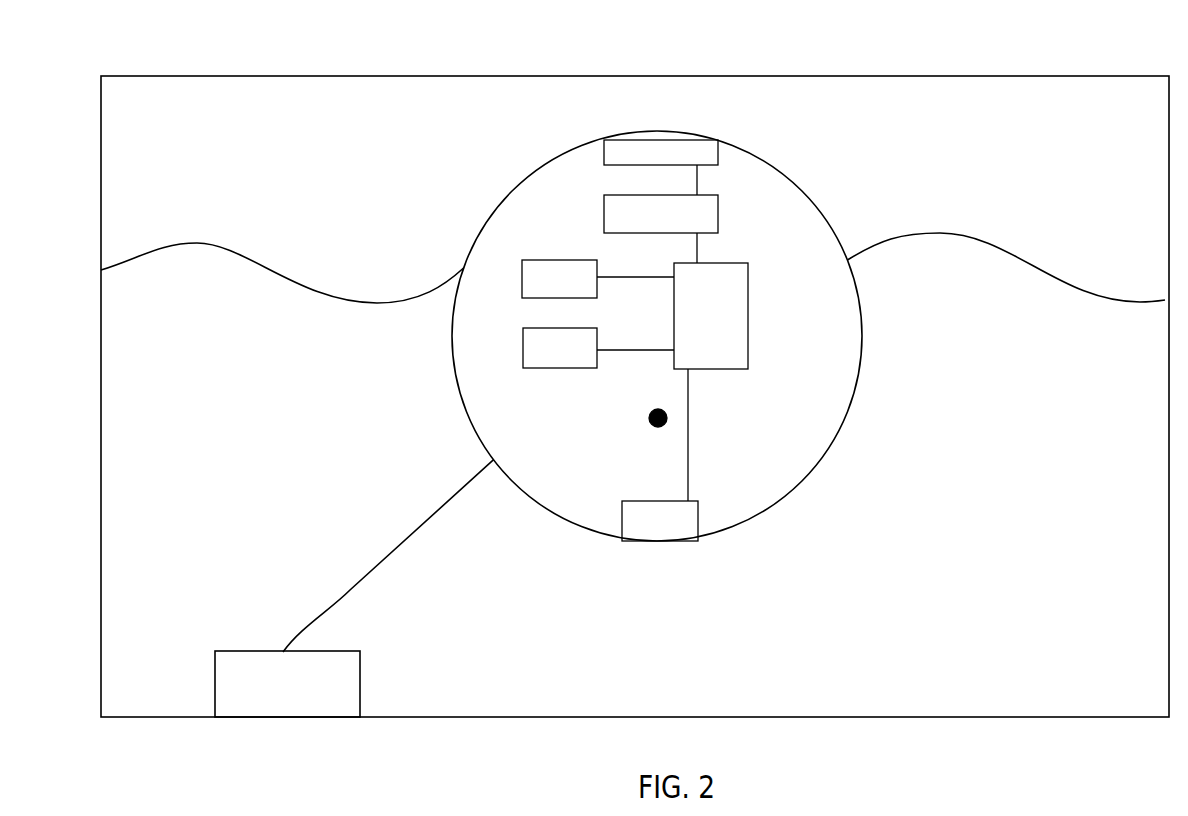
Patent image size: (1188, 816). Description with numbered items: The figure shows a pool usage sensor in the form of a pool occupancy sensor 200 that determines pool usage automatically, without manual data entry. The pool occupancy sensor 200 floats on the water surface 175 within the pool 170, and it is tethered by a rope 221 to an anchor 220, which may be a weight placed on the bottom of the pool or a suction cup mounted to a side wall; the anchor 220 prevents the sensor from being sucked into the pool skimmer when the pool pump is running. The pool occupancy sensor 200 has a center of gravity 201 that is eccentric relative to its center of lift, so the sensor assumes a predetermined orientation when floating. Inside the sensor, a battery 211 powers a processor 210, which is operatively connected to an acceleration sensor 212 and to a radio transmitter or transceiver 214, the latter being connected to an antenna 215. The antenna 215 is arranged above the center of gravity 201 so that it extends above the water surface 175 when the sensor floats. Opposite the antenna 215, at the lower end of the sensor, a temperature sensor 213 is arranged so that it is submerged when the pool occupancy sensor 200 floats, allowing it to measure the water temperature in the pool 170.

The pool 170 is at (147, 76).
The water surface 175 is at (145, 253).
The pool occupancy sensor 200 is at (505, 193).
The center of gravity 201 is at (650, 422).
The processor 210 is at (711, 316).
The battery 211 is at (598, 279).
The acceleration sensor 212 is at (598, 348).
The temperature sensor 213 is at (660, 455).
The radio transmitter or transceiver 214 is at (661, 214).
The antenna 215 is at (661, 153).
The anchor 220 is at (232, 658).
The rope 221 is at (375, 560).